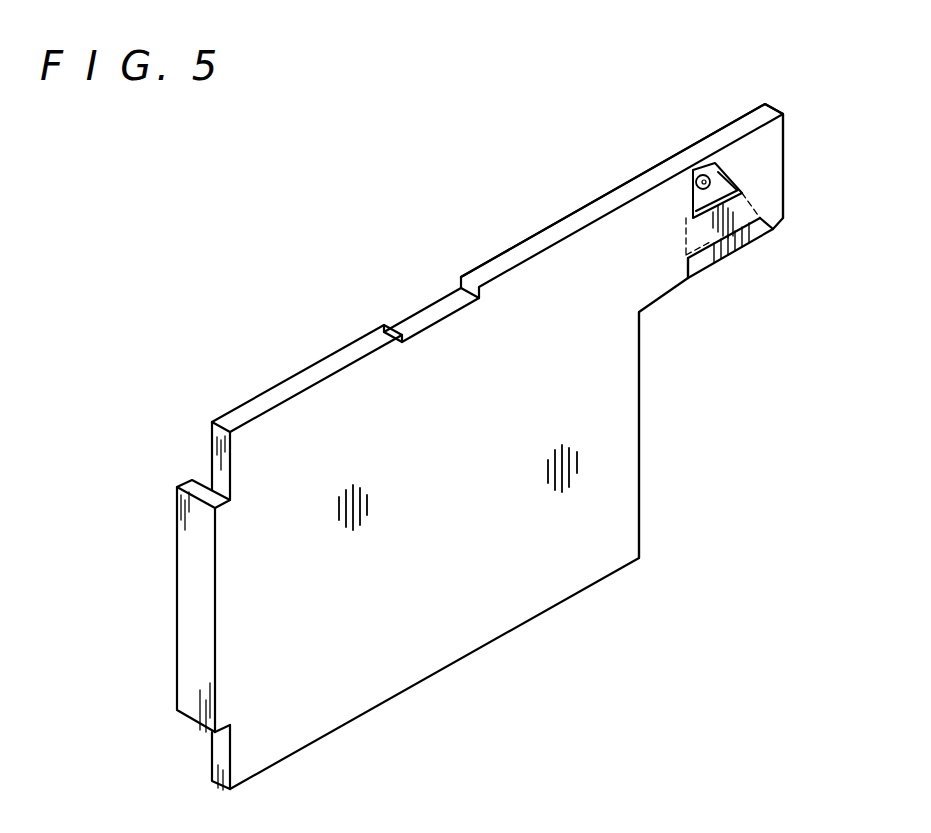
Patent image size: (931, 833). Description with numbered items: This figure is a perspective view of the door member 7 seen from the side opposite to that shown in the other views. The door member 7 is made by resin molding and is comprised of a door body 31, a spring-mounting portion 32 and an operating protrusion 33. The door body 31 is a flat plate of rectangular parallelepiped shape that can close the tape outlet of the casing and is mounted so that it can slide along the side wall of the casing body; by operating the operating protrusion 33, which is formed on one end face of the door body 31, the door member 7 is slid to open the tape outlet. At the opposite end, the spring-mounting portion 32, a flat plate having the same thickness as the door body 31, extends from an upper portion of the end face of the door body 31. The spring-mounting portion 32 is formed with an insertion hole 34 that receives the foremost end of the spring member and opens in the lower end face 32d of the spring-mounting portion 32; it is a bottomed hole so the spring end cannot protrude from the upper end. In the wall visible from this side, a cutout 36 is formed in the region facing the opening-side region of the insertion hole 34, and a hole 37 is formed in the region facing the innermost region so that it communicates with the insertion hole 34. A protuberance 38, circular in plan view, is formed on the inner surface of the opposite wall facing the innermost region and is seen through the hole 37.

The door member 7 is at (385, 267).
The door body 31 is at (603, 403).
The spring-mounting portion 32 is at (760, 118).
The lower end face 32d is at (757, 242).
The operating protrusion 33 is at (192, 480).
The insertion hole 34 is at (748, 233).
The cutout 36 is at (707, 244).
The hole 37 is at (722, 182).
The protuberance 38 is at (700, 174).